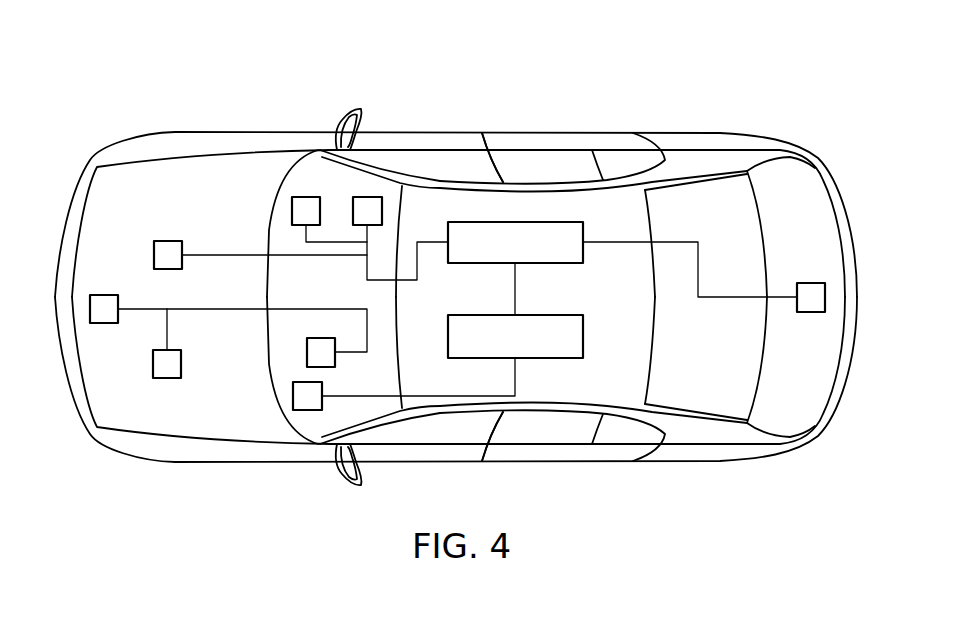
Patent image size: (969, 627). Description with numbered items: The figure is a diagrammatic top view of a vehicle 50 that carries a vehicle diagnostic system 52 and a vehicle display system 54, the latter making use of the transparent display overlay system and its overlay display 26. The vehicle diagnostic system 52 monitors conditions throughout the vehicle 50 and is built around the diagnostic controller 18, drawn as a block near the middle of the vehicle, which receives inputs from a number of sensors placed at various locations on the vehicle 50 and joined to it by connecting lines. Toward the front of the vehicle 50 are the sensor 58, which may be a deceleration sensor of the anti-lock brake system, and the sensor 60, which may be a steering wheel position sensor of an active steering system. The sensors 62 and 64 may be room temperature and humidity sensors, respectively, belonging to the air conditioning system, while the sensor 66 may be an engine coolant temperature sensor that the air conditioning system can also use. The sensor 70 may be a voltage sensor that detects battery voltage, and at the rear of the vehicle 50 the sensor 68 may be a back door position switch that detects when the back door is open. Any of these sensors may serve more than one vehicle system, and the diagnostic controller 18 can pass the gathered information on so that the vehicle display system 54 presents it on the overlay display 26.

The diagnostic controller 18 is at (526, 253).
The overlay display 26 is at (300, 393).
The vehicle 50 is at (745, 80).
The vehicle diagnostic system 52 is at (547, 149).
The vehicle display system 54 is at (548, 446).
The sensor 58 is at (168, 373).
The sensor 60 is at (313, 350).
The sensor 62 is at (297, 207).
The sensor 64 is at (370, 205).
The sensor 66 is at (168, 248).
The sensor 68 is at (813, 303).
The sensor 70 is at (103, 300).